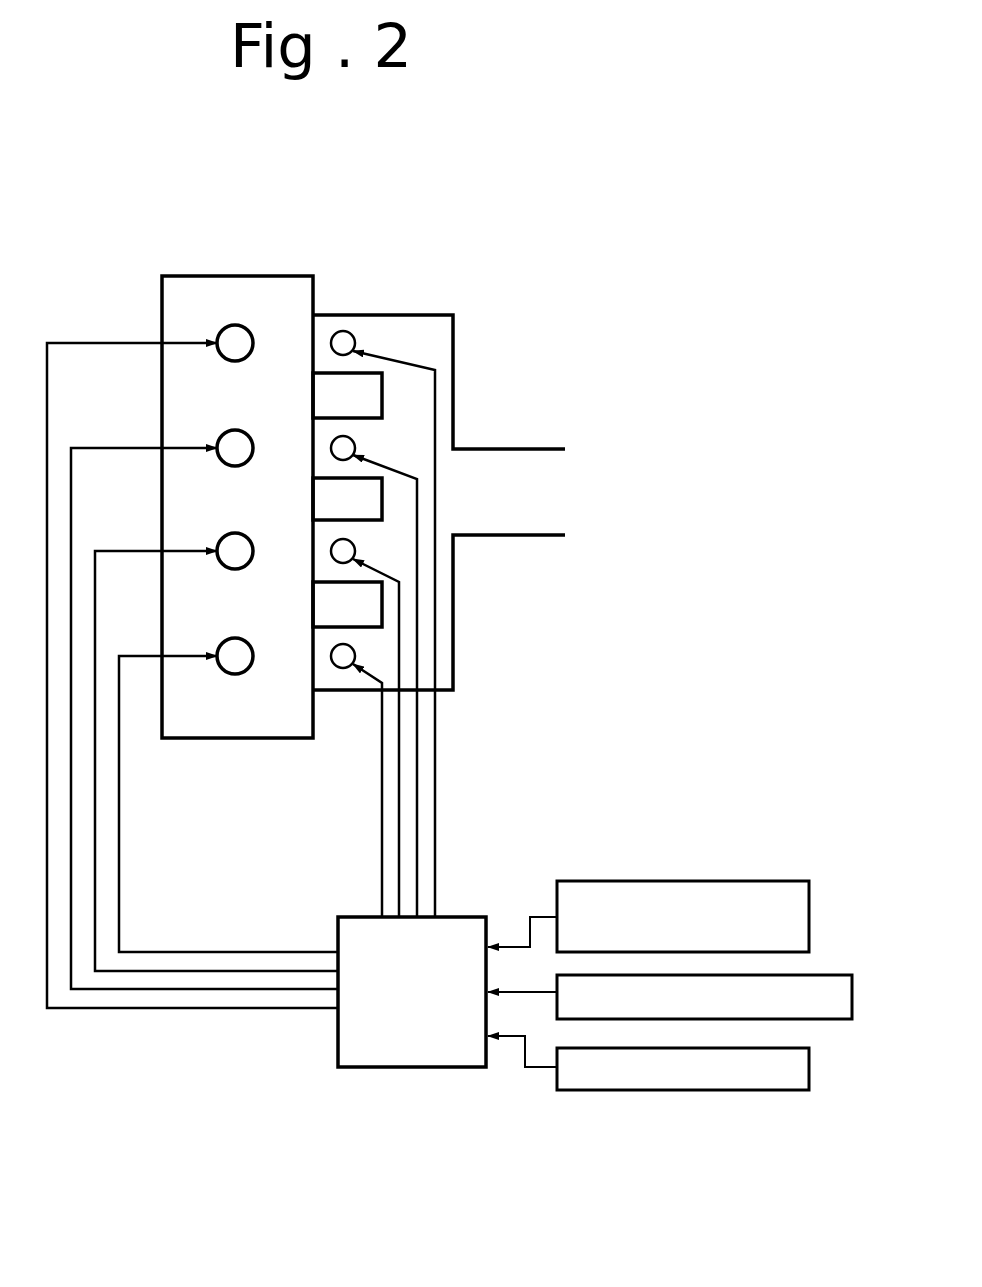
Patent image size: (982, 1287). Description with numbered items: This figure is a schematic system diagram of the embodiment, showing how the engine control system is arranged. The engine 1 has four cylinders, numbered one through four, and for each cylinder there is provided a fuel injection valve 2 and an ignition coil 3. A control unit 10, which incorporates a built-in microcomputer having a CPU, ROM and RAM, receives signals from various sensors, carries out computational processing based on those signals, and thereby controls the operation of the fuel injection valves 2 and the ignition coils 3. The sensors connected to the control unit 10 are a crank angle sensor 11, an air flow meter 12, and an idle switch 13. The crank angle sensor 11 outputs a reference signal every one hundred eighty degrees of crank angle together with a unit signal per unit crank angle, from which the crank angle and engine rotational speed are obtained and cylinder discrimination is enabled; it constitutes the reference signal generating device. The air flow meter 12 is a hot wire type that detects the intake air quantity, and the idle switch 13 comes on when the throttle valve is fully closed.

The engine 1 is at (192, 270).
The fuel injection valve 2 is at (348, 330).
The ignition coil 3 is at (253, 325).
The control unit 10 is at (410, 1068).
The crank angle sensor 11 is at (688, 879).
The air flow meter 12 is at (833, 974).
The idle switch 13 is at (652, 1092).